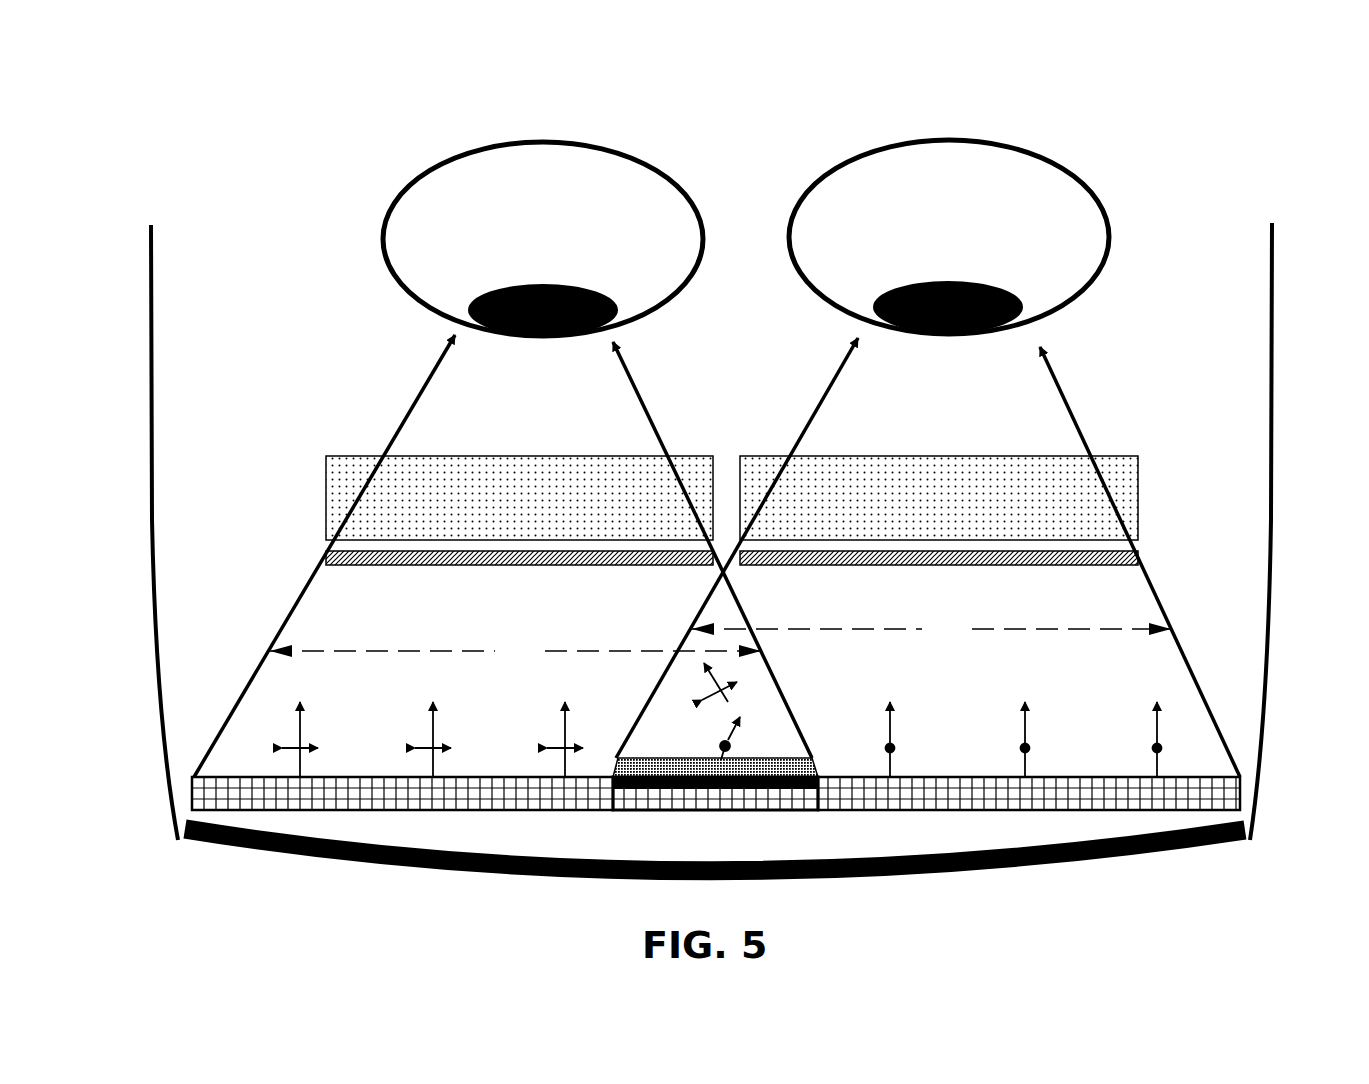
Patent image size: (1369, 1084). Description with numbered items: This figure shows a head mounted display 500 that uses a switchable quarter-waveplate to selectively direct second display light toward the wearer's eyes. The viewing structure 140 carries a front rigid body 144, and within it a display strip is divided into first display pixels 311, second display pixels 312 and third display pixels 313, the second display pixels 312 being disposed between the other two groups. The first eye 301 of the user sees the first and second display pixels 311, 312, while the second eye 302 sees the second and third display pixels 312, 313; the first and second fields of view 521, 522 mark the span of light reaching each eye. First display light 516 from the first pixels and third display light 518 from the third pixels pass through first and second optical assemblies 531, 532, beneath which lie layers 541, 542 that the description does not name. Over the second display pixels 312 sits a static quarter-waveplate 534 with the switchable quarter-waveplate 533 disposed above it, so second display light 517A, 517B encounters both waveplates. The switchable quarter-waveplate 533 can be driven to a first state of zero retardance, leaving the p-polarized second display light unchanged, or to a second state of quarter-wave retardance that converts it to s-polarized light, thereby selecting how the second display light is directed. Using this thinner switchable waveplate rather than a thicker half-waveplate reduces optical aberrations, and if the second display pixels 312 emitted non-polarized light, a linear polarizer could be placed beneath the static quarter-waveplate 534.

The display system 500 is at (1242, 66).
The viewing structure 140 is at (151, 538).
The front rigid body 144 is at (1003, 868).
The first eye 301 is at (622, 130).
The second eye 302 is at (1028, 129).
The first display pixels 311 is at (533, 811).
The second display pixels 312 is at (777, 811).
The third display pixels 313 is at (950, 812).
The adjustable pixel light emitters 516 is at (442, 737).
The central pixel light emission direction 517A is at (737, 675).
The central pixel light emission point 517B is at (712, 728).
The fixed pixel light emitters 518 is at (1013, 739).
The left display field width 521 is at (515, 651).
The right display field width 522 is at (931, 629).
The left lens 531 is at (506, 512).
The right lens 532 is at (933, 512).
The switchable quarter-waveplate 533 is at (815, 758).
The static quarter-waveplate 534 is at (638, 793).
The left optical layer 541 is at (455, 565).
The right optical layer 542 is at (897, 565).